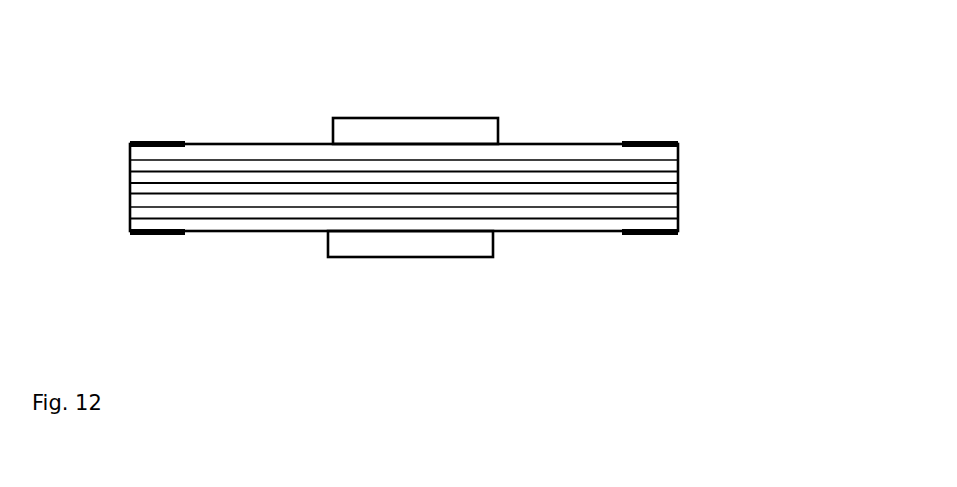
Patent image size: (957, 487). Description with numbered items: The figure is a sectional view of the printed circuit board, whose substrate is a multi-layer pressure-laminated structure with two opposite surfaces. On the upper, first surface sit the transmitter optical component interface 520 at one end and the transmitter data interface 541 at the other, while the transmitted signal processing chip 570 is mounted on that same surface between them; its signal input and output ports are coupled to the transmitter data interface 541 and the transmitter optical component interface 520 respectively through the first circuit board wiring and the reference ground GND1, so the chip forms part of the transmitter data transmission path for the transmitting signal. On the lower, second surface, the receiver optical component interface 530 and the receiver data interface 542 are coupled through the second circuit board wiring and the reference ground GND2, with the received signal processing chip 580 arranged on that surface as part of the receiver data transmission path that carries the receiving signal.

The transmitter optical component interface 520 is at (158, 143).
The receiver optical component interface 530 is at (147, 235).
The transmitter data interface 541 is at (662, 143).
The receiver data interface 542 is at (660, 233).
The transmitted signal processing chip 570 is at (402, 133).
The received signal processing chip 580 is at (410, 242).
The reference ground GND1 is at (679, 161).
The reference ground GND2 is at (679, 219).